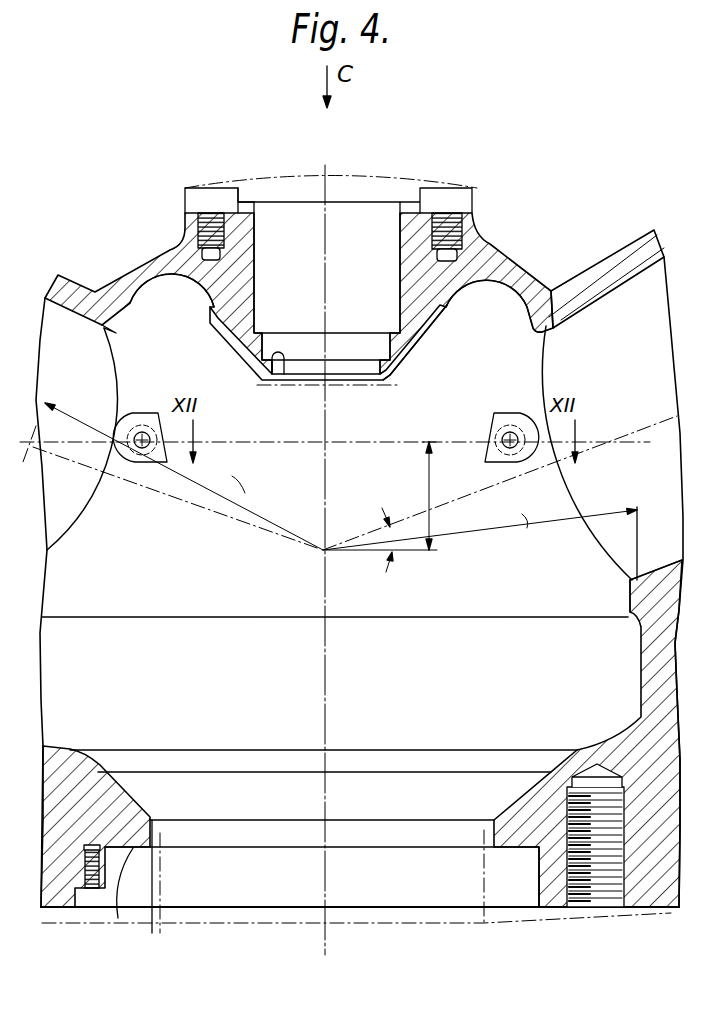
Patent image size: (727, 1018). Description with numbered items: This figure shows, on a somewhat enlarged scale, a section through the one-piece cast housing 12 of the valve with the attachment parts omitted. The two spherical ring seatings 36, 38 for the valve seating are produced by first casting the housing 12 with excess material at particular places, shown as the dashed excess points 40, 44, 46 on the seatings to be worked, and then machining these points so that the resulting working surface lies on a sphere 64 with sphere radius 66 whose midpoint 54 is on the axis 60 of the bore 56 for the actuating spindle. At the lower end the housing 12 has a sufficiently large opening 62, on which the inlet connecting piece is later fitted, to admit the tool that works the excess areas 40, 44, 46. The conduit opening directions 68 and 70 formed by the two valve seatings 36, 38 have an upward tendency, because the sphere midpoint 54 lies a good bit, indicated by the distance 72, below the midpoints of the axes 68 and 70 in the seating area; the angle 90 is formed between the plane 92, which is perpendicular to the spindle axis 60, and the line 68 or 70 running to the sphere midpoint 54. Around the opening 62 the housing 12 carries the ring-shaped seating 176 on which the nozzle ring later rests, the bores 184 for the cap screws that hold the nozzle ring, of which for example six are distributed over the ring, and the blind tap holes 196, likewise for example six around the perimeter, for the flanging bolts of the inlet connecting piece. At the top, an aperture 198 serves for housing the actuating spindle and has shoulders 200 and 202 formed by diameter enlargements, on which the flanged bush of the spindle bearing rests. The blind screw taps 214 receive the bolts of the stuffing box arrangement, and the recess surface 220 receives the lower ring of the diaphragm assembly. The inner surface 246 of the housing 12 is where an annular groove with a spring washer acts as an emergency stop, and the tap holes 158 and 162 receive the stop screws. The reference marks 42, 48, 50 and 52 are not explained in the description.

The housing 12 is at (132, 270).
The spherical ring seating 36 is at (126, 312).
The spherical ring seating 38 is at (531, 310).
The excess point 40 is at (115, 334).
The cover plate 42 is at (244, 372).
The excess point 44 is at (523, 326).
The excess point 46 is at (628, 584).
The retaining plate 48 is at (164, 872).
The lower axis line 50 is at (421, 923).
The flange ring 52 is at (398, 188).
The sphere midpoint 54 is at (323, 552).
The bore for actuating spindle 56 is at (242, 200).
The axis of bore 60 is at (328, 505).
The opening 62 is at (266, 905).
The sphere 64 is at (71, 527).
The sphere radius 66 is at (482, 530).
The conduit opening direction 68 is at (656, 418).
The conduit opening direction 70 is at (60, 455).
The offset distance 72 is at (431, 481).
The angle 90 is at (393, 536).
The plane 92 is at (351, 553).
The tap hole 158 is at (142, 447).
The tap hole 162 is at (510, 427).
The ring-shaped seating 176 is at (125, 905).
The bore 184 is at (95, 890).
The blind tap hole 196 is at (603, 900).
The aperture 198 is at (352, 208).
The shoulder 200 is at (277, 372).
The shoulder 202 is at (262, 345).
The blind screw tap 214 is at (205, 213).
The recess surface 220 is at (441, 190).
The inner surface of the housing 246 is at (385, 378).